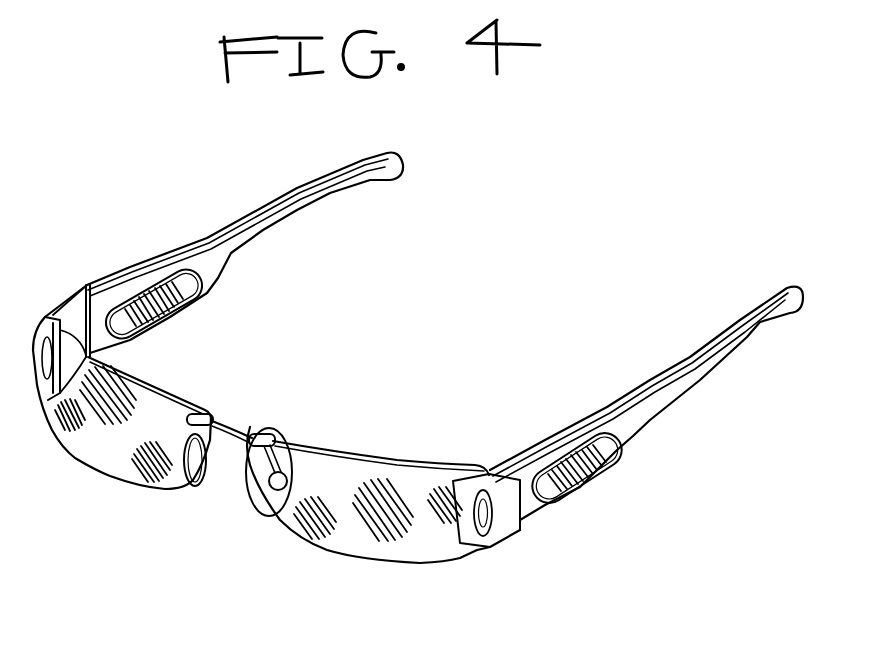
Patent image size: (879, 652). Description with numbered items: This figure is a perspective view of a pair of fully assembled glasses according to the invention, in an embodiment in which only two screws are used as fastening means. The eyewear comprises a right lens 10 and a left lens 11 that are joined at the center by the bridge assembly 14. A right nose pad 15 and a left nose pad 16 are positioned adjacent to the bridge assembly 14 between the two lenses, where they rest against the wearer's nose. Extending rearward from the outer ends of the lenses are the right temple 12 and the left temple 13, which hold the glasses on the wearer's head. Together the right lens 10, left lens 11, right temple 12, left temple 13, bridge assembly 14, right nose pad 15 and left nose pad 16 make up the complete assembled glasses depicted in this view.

The right lens 10 is at (120, 445).
The left lens 11 is at (400, 557).
The right temple 12 is at (215, 252).
The left temple 13 is at (642, 415).
The bridge assembly 14 is at (233, 440).
The right nose pad 15 is at (193, 490).
The left nose pad 16 is at (278, 473).